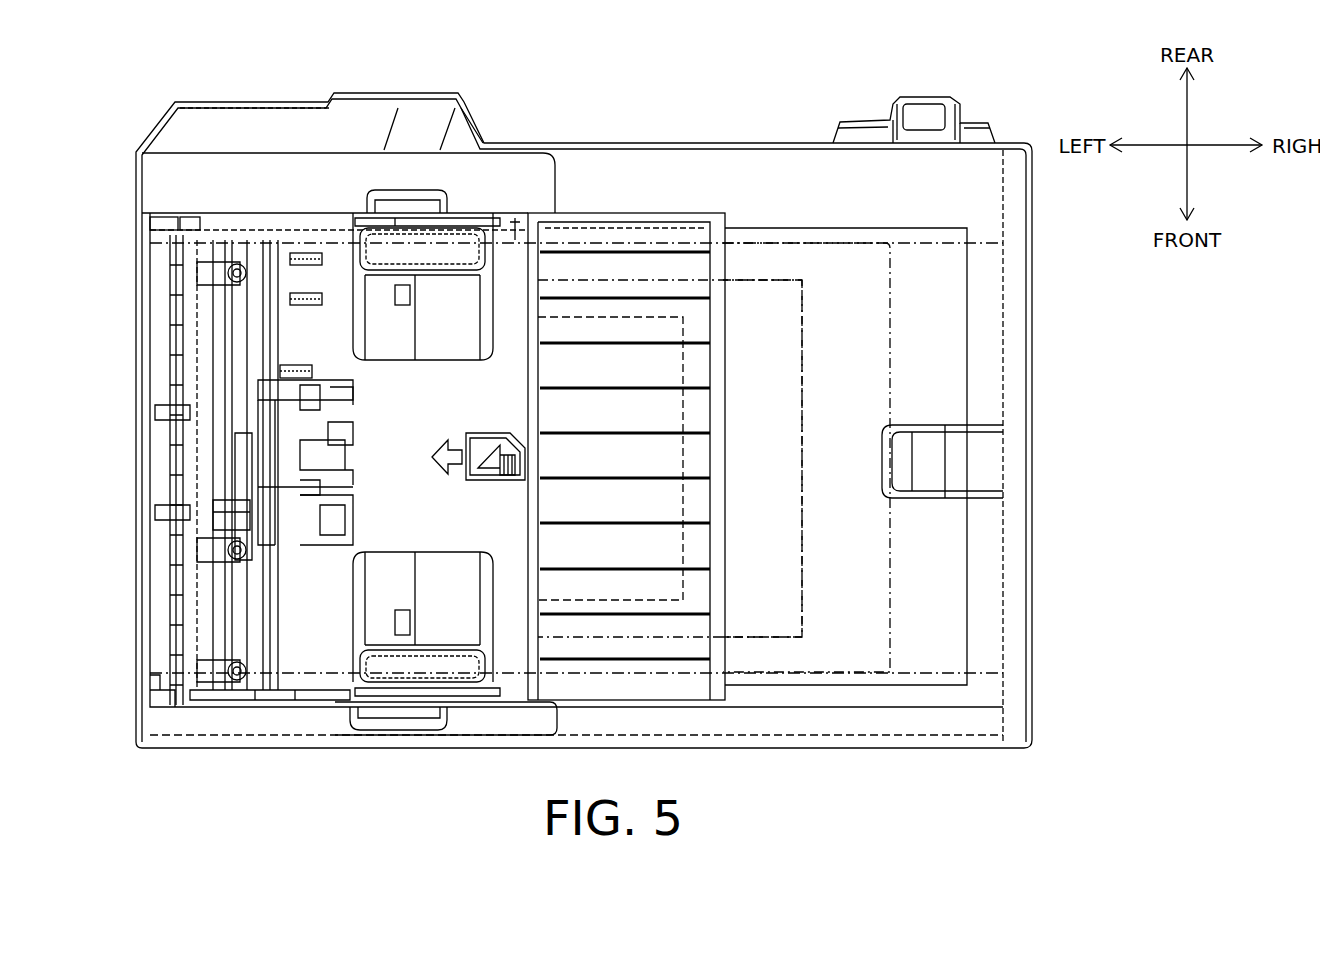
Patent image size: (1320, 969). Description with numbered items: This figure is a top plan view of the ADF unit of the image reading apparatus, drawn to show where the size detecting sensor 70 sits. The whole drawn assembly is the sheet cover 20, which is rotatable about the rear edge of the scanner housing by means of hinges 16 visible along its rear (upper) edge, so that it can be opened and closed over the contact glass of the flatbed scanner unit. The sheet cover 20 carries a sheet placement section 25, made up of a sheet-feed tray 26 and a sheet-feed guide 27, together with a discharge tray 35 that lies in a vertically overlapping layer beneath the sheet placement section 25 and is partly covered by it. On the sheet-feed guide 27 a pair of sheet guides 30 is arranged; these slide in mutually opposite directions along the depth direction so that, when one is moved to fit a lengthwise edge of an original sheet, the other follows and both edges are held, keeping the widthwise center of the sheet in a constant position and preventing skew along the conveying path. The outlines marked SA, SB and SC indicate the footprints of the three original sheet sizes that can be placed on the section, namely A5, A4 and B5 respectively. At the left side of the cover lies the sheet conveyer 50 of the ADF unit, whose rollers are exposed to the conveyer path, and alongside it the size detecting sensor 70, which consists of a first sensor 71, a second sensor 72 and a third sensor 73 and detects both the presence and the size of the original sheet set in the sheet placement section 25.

The sheet cover 20 is at (163, 182).
The hinges 16 is at (923, 112).
The sheet placement section 25 is at (528, 85).
The sheet-feed tray 26 is at (626, 232).
The sheet-feed guide 27 is at (514, 236).
The sheet guides 30 is at (460, 245).
The discharge tray 35 is at (943, 624).
The sheet conveyer 50 is at (275, 449).
The size detecting sensor 70 is at (88, 245).
The first sensor 71 is at (290, 360).
The second sensor 72 is at (287, 258).
The third sensor 73 is at (287, 298).
The original sheet SA is at (724, 372).
The original sheet SB is at (892, 355).
The original sheet SC is at (802, 558).